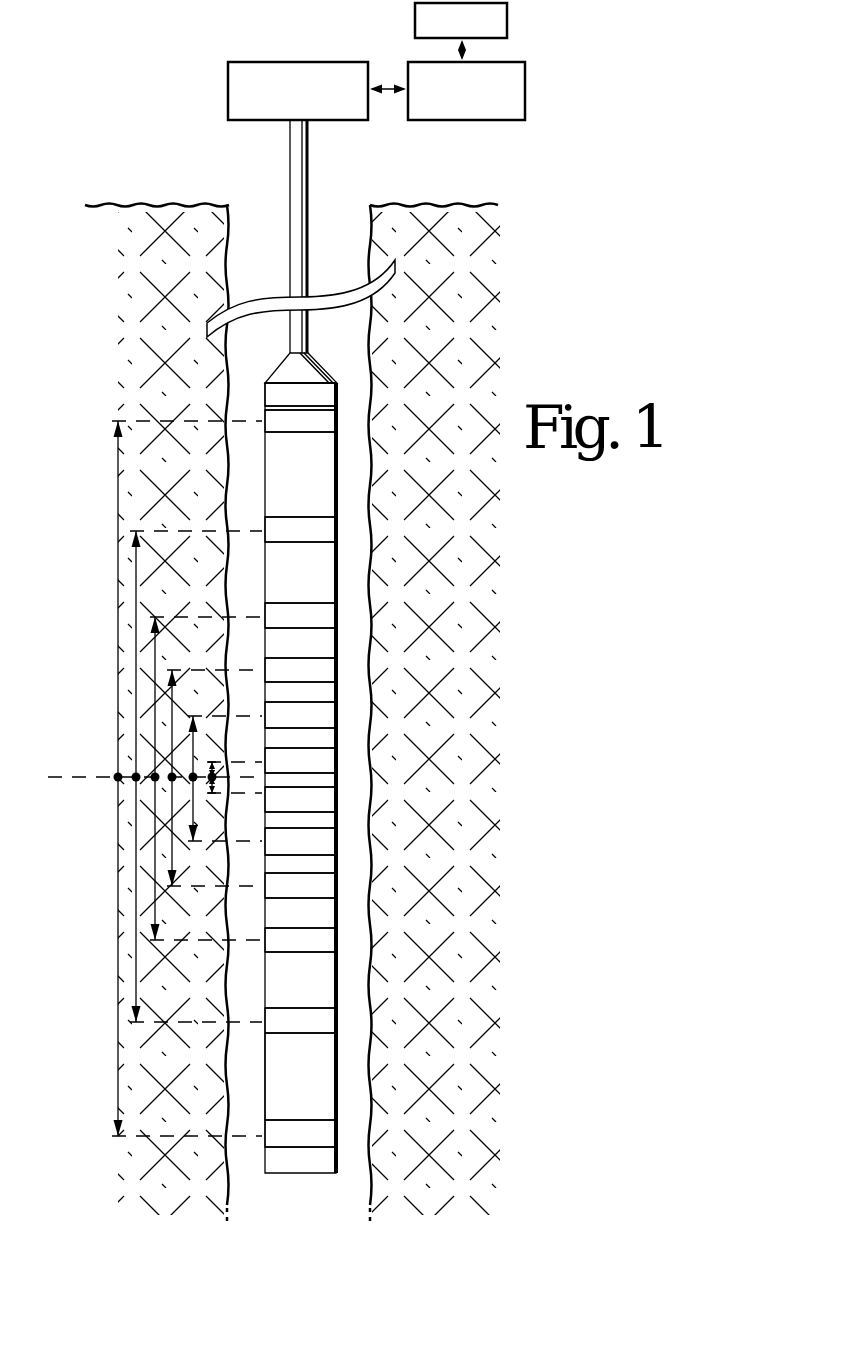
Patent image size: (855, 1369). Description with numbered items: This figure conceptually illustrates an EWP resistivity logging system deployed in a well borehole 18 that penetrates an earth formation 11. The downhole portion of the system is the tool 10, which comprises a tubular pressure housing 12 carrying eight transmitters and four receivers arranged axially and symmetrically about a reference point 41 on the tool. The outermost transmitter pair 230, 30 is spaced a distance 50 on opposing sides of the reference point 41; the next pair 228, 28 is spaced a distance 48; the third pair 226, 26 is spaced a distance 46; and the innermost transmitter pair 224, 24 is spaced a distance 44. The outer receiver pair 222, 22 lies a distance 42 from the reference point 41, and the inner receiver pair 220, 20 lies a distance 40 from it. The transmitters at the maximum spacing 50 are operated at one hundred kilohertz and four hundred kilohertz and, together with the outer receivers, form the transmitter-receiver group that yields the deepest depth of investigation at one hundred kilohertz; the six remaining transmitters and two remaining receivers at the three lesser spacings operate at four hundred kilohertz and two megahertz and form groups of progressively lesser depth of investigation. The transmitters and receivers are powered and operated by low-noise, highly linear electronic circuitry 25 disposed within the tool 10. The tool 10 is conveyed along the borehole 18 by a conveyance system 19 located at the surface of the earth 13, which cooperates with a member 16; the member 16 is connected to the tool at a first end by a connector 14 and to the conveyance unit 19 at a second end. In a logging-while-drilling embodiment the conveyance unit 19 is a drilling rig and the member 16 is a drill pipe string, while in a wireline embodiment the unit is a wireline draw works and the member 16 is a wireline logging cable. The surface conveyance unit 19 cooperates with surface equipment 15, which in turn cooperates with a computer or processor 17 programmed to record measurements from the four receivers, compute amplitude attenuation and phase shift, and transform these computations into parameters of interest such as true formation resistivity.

The tool 10 is at (352, 469).
The earth formation 11 is at (186, 272).
The tubular pressure housing 12 is at (337, 1070).
The surface of the earth 13 is at (418, 203).
The connector 14 is at (282, 372).
The surface equipment 15 is at (490, 122).
The member 16 is at (309, 268).
The computer 17 is at (508, 22).
The well borehole 18 is at (270, 272).
The conveyance system 19 is at (252, 122).
The receiver R2 20 is at (337, 757).
The receiver R4 22 is at (337, 712).
The transmitter T2 24 is at (337, 668).
The downhole circuitry 25 is at (337, 393).
The transmitter T4 26 is at (337, 614).
The transmitter T6 28 is at (337, 527).
The transmitter T8 30 is at (337, 416).
The distance 40 is at (214, 770).
The reference point 41 is at (106, 768).
The distance 42 is at (194, 745).
The distance 44 is at (172, 660).
The distance 46 is at (155, 640).
The distance 48 is at (136, 563).
The distance 50 is at (118, 482).
The receiver R1 220 is at (337, 797).
The receiver coil R3 222 is at (337, 840).
The transmitter T1 224 is at (337, 883).
The transmitter T3 226 is at (337, 940).
The transmitter T5 228 is at (337, 1023).
The transmitter T7 230 is at (337, 1130).